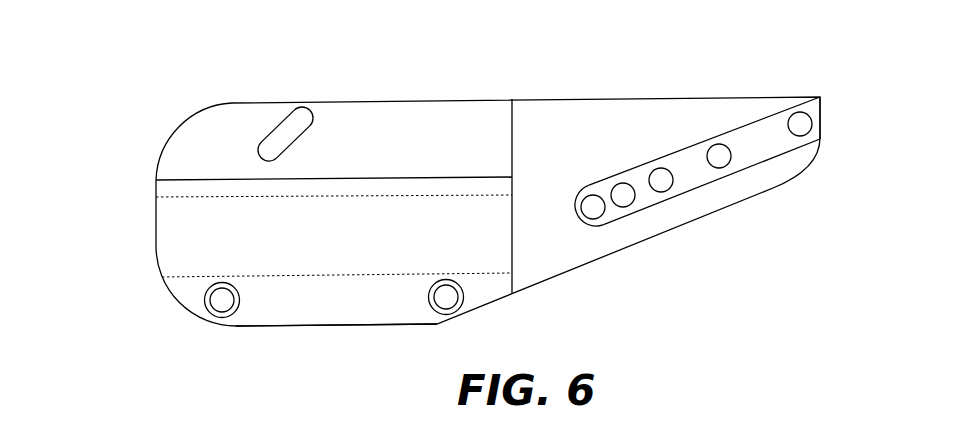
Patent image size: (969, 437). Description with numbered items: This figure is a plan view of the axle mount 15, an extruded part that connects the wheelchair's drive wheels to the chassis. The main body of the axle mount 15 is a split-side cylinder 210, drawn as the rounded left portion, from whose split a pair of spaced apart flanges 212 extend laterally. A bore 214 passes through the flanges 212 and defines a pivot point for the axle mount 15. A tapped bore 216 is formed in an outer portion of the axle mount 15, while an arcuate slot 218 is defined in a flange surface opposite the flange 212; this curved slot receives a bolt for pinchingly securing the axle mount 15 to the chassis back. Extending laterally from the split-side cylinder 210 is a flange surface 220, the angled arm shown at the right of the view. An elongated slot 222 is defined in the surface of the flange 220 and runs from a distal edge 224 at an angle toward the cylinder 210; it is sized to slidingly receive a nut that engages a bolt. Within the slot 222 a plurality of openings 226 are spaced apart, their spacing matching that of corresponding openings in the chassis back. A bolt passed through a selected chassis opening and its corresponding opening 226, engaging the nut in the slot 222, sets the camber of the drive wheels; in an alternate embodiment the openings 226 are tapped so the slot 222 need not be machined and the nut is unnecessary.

The axle mount 15 is at (116, 182).
The split-side cylinder 210 is at (175, 238).
The flanges 212 is at (331, 313).
The bore 214 is at (455, 306).
The tapped bore 216 is at (208, 306).
The arcuate slot 218 is at (282, 112).
The flange surface 220 is at (733, 135).
The elongated slot 222 is at (757, 135).
The distal edge 224 is at (823, 115).
The openings 226 is at (800, 136).